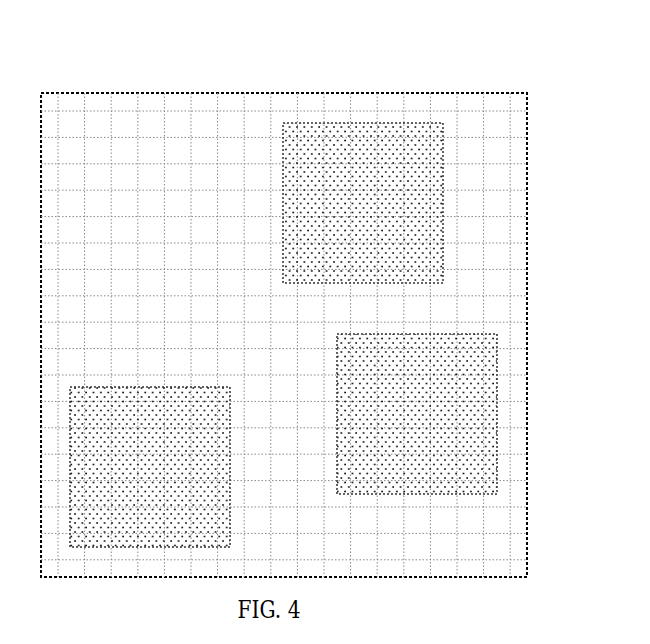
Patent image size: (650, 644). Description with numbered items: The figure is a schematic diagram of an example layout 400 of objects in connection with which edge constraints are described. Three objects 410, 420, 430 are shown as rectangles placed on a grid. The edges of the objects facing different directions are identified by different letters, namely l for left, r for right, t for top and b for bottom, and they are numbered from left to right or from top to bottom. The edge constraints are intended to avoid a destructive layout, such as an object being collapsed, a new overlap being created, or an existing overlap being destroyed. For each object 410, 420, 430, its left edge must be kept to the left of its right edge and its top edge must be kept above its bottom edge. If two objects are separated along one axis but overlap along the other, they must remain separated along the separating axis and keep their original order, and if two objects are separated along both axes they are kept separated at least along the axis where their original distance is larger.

The grid layout of bounding regions 400 is at (105, 71).
The object 410 is at (345, 213).
The object 420 is at (399, 424).
The object 430 is at (132, 477).